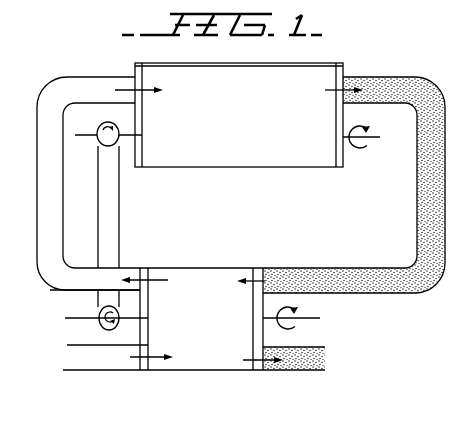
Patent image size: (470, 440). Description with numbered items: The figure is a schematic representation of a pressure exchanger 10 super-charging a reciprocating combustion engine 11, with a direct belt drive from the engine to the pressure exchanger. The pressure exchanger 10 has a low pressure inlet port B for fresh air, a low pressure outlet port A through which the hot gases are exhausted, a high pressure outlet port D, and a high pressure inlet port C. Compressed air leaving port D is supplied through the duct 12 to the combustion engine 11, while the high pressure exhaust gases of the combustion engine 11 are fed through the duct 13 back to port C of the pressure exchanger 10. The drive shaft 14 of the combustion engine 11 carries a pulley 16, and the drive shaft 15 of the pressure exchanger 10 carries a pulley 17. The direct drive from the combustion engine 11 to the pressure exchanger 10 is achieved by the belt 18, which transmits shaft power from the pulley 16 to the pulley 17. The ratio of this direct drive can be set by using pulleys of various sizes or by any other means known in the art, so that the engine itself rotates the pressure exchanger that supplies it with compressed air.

The pressure exchanger 10 is at (230, 260).
The combustion engine 11 is at (262, 171).
The duct 12 is at (64, 231).
The duct 13 is at (415, 209).
The drive shaft 14 is at (105, 148).
The drive shaft 15 is at (83, 298).
The pulley 16 is at (108, 150).
The pulley 17 is at (99, 324).
The belt 18 is at (121, 239).